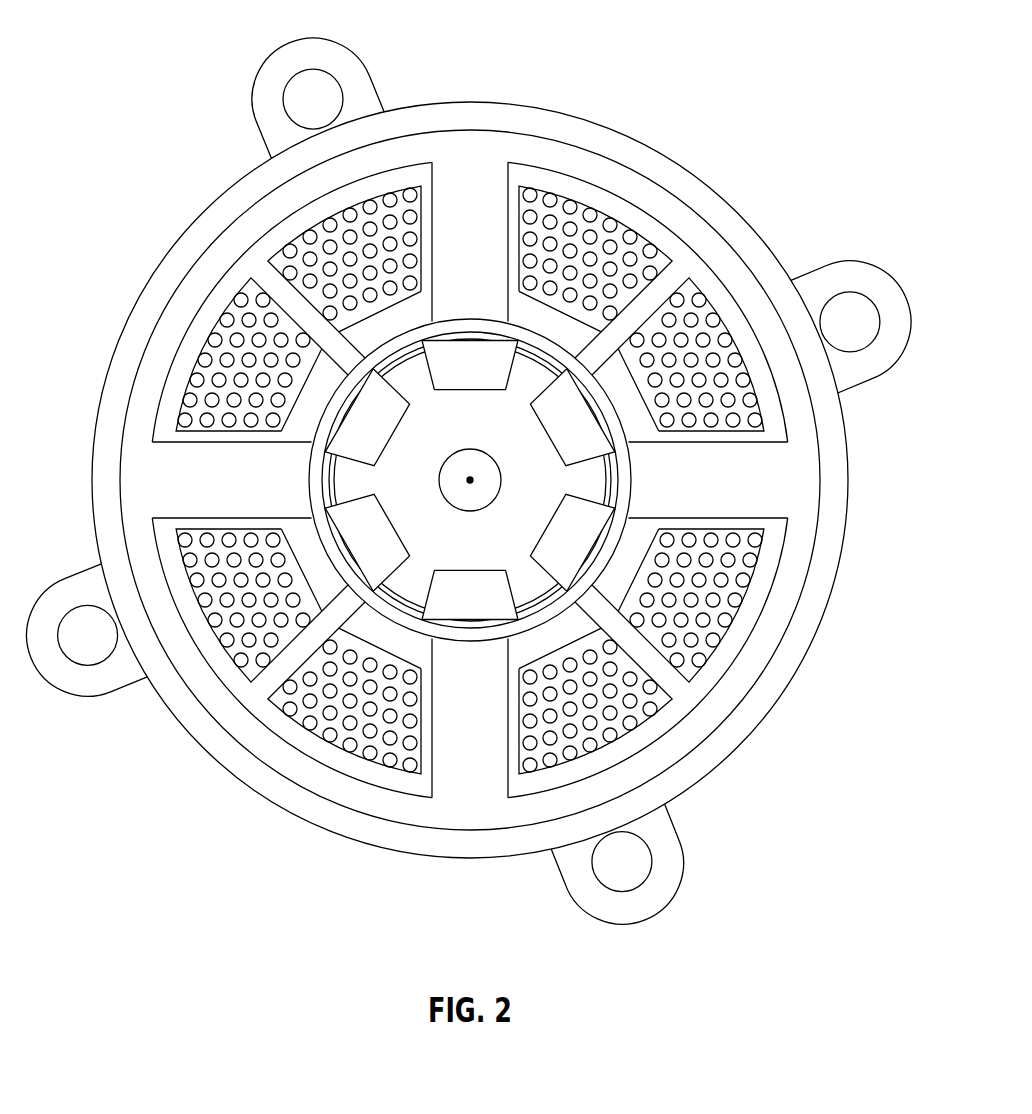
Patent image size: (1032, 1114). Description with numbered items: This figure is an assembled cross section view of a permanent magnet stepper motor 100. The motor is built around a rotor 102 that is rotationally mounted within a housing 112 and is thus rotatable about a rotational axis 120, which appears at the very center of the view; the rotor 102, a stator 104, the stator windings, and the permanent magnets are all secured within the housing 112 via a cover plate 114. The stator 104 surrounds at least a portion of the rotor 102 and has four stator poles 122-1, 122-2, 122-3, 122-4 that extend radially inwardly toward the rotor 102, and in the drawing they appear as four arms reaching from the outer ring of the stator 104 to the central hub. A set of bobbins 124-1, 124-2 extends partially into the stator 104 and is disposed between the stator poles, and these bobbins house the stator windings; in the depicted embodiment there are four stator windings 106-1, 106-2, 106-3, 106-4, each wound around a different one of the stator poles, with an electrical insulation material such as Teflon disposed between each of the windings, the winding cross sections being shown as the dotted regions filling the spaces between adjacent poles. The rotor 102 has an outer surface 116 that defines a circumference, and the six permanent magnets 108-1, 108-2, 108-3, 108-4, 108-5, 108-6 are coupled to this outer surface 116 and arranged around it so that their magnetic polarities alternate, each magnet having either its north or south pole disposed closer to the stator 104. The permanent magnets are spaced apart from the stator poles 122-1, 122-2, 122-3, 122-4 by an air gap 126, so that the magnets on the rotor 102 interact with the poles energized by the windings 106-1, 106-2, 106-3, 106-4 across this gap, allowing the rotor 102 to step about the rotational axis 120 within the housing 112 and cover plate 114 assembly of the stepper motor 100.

The permanent magnet stepper motor 100 is at (757, 47).
The rotor 102 is at (442, 454).
The stator 104 is at (540, 139).
The stator winding 106-1 is at (613, 229).
The stator winding 106-2 is at (733, 578).
The stator winding 106-3 is at (342, 716).
The stator winding 106-4 is at (237, 338).
The permanent magnet 108-1 is at (502, 373).
The permanent magnet 108-2 is at (558, 447).
The permanent magnet 108-3 is at (548, 547).
The permanent magnet 108-4 is at (502, 612).
The permanent magnet 108-5 is at (373, 527).
The permanent magnet 108-6 is at (388, 422).
The housing 112 is at (795, 672).
The cover plate 114 is at (680, 832).
The outer surface 116 is at (577, 313).
The rotational axis 120 is at (472, 479).
The stator pole 122-1 is at (500, 284).
The stator pole 122-2 is at (745, 492).
The stator pole 122-3 is at (500, 722).
The stator pole 122-4 is at (260, 494).
The bobbin 124-1 is at (393, 177).
The bobbin 124-2 is at (597, 197).
The air gap 126 is at (595, 390).